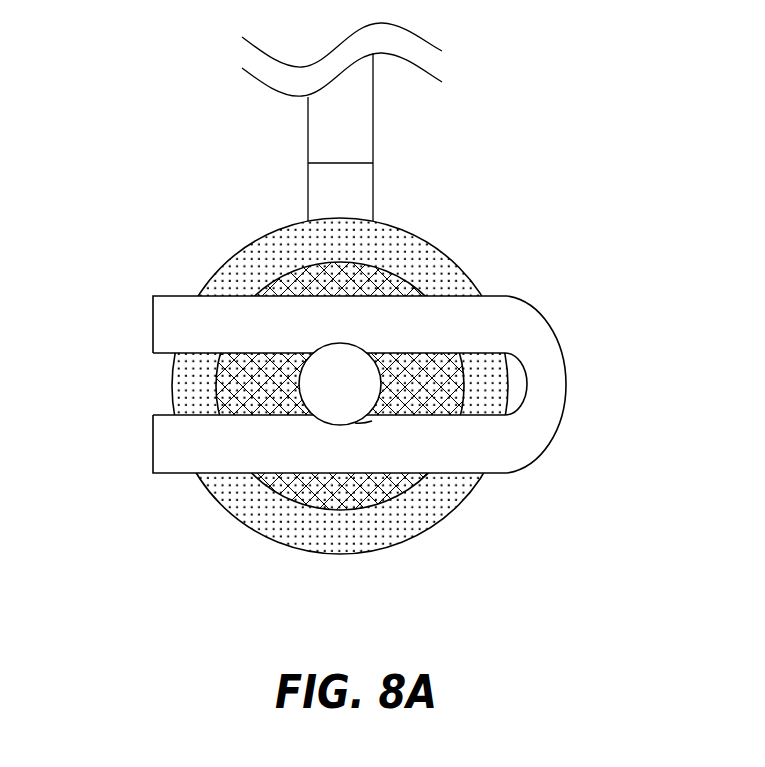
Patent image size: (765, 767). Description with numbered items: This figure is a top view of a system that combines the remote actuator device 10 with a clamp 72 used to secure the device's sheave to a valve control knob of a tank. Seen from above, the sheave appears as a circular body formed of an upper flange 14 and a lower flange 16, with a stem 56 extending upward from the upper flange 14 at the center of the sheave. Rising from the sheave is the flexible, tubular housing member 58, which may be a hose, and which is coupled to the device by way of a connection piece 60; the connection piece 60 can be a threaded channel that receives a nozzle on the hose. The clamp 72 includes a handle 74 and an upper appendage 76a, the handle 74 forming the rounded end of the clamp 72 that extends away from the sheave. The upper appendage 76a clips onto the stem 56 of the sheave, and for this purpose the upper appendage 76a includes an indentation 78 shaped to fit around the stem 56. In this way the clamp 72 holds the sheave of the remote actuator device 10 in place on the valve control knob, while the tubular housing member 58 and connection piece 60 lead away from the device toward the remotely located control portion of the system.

The remote actuator device 10 is at (112, 97).
The upper flange 14 is at (274, 295).
The lower flange 16 is at (286, 283).
The stem 56 is at (335, 407).
The tubular housing member 58 is at (375, 119).
The connection piece 60 is at (375, 204).
The clamp 72 is at (572, 288).
The handle 74 is at (556, 415).
The upper appendage 76a is at (458, 452).
The indentation 78 is at (366, 422).